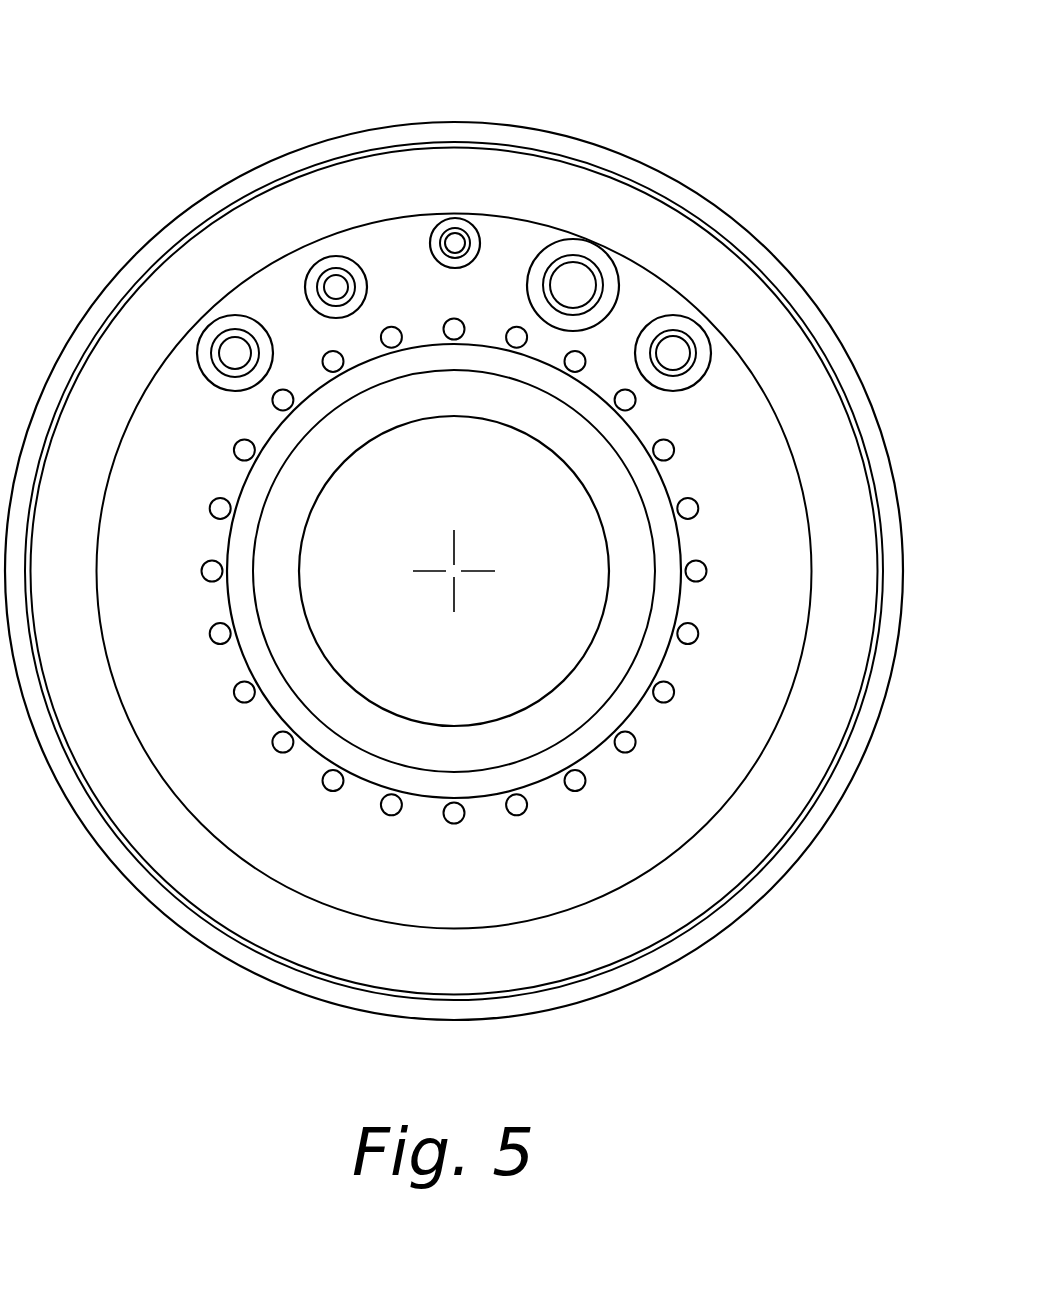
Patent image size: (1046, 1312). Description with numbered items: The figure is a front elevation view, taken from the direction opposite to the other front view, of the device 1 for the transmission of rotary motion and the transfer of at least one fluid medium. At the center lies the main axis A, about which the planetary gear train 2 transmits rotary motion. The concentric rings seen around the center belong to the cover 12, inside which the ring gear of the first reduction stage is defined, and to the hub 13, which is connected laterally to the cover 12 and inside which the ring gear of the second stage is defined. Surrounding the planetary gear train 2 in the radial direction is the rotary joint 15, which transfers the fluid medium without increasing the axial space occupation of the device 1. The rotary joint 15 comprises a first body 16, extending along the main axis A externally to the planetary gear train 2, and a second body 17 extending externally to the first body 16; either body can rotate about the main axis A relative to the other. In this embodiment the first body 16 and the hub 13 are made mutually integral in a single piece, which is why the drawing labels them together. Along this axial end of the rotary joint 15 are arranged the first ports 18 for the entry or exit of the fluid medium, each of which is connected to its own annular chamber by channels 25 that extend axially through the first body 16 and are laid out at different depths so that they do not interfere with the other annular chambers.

The device for the transmission of rotary motion and the transfer of at least one fl 1 is at (806, 128).
The planetary gear train 2 is at (360, 613).
The cover 12 is at (428, 662).
The hub 13 is at (715, 415).
The first body 16 is at (573, 515).
The rotary joint 15 is at (676, 175).
The second body 17 is at (237, 248).
The first port 18 is at (222, 340).
The channel 25 is at (222, 338).
The main axis A is at (456, 568).